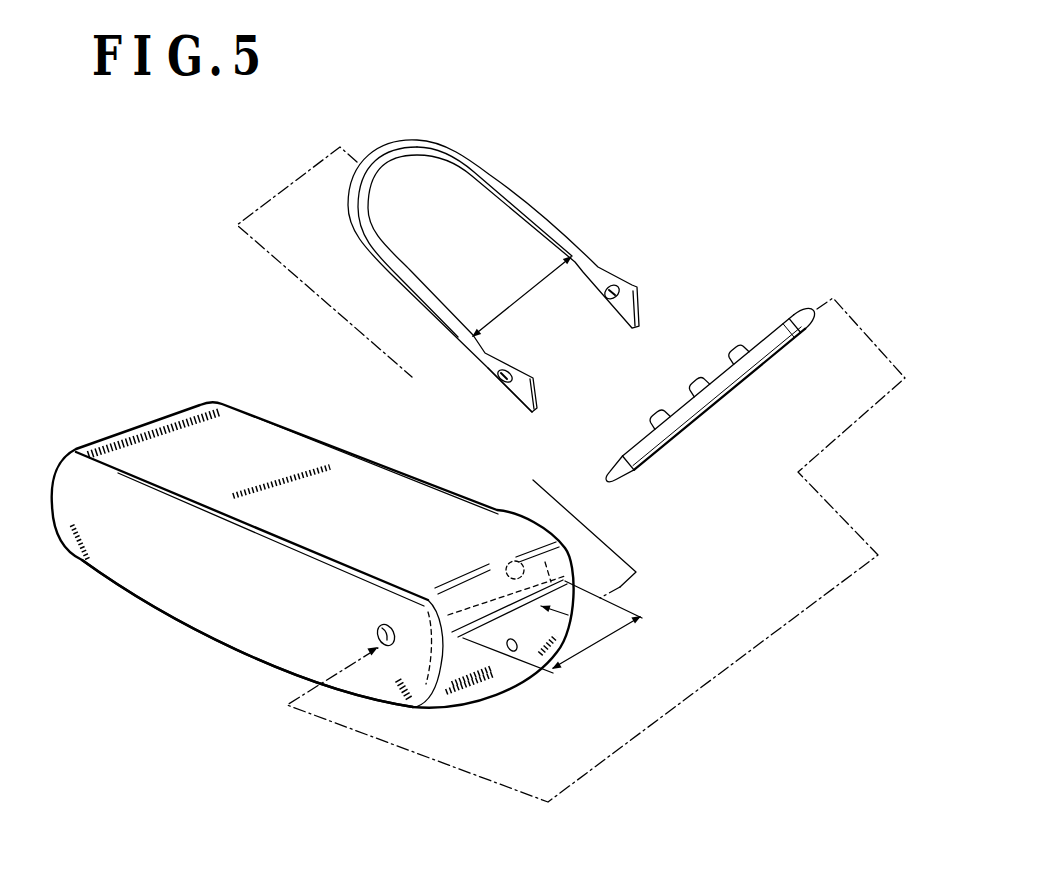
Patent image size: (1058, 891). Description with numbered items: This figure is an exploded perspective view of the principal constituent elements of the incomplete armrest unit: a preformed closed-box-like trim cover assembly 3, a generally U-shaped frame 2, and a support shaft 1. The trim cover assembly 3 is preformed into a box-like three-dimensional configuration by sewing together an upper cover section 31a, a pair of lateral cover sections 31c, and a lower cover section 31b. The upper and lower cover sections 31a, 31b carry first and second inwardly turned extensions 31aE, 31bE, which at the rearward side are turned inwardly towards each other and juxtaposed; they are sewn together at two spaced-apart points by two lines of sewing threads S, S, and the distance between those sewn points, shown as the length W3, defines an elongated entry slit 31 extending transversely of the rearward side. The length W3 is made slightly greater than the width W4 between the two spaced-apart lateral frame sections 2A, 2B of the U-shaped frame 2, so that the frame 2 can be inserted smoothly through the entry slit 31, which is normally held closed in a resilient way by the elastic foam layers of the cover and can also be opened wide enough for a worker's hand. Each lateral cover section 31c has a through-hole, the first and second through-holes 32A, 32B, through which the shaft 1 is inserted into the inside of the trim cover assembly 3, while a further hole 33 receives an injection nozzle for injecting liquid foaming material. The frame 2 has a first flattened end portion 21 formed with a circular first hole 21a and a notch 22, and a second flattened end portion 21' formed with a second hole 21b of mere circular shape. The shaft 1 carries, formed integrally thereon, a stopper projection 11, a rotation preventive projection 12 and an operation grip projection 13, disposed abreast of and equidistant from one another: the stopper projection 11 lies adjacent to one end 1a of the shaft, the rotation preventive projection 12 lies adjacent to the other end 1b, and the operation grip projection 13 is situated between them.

The support shaft 1 is at (718, 409).
The one end of the shaft 1a is at (803, 312).
The another end of the shaft 1b is at (621, 480).
The U-shaped frame 2 is at (506, 184).
The lateral frame section 2A is at (417, 303).
The lateral frame section 2B is at (535, 208).
The trim cover assembly 3 is at (241, 403).
The stopper projection 11 is at (742, 344).
The rotation preventive projection 12 is at (656, 413).
The operation grip projection 13 is at (700, 380).
The first flattened end portion 21 is at (537, 421).
The second flattened end portion 21' is at (667, 280).
The first hole 21a is at (518, 395).
The second hole 21b is at (612, 283).
The notch 22 is at (491, 376).
The entry slit 31 is at (500, 605).
The upper cover section 31a is at (287, 462).
The first inwardly turned extension 31aE is at (447, 596).
The lower cover section 31b is at (180, 624).
The second inwardly turned extension 31bE is at (437, 710).
The lateral cover section 31c is at (360, 458).
The first through-hole 32A is at (377, 637).
The second through-hole 32B is at (517, 557).
The hole 33 is at (510, 648).
The sewing thread S is at (433, 585).
The length of entry slit W3 is at (596, 647).
The width of lateral frame sections W4 is at (522, 296).